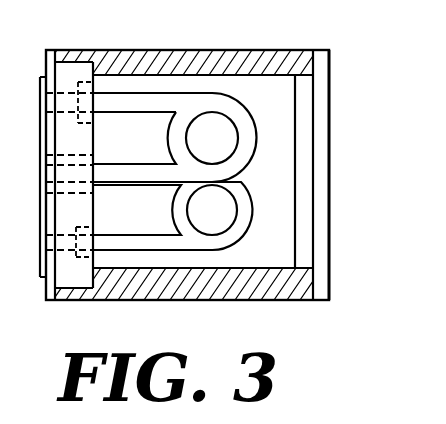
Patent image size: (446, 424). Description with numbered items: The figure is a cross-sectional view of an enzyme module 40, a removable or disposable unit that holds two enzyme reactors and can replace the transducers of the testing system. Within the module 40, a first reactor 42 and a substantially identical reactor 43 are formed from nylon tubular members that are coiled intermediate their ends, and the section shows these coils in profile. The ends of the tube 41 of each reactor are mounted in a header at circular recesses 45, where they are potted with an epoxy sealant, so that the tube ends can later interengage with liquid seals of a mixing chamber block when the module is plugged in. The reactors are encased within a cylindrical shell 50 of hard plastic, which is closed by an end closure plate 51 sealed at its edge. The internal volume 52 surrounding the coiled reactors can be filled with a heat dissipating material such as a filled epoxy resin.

The enzyme module 40 is at (352, 297).
The tube 41 is at (240, 110).
The first reactor 42 is at (215, 245).
The reactor 43 is at (137, 93).
The circular recesses 45 is at (80, 82).
The cylindrical shell 50 is at (273, 53).
The end closure plate 51 is at (330, 92).
The internal volume 52 is at (275, 143).